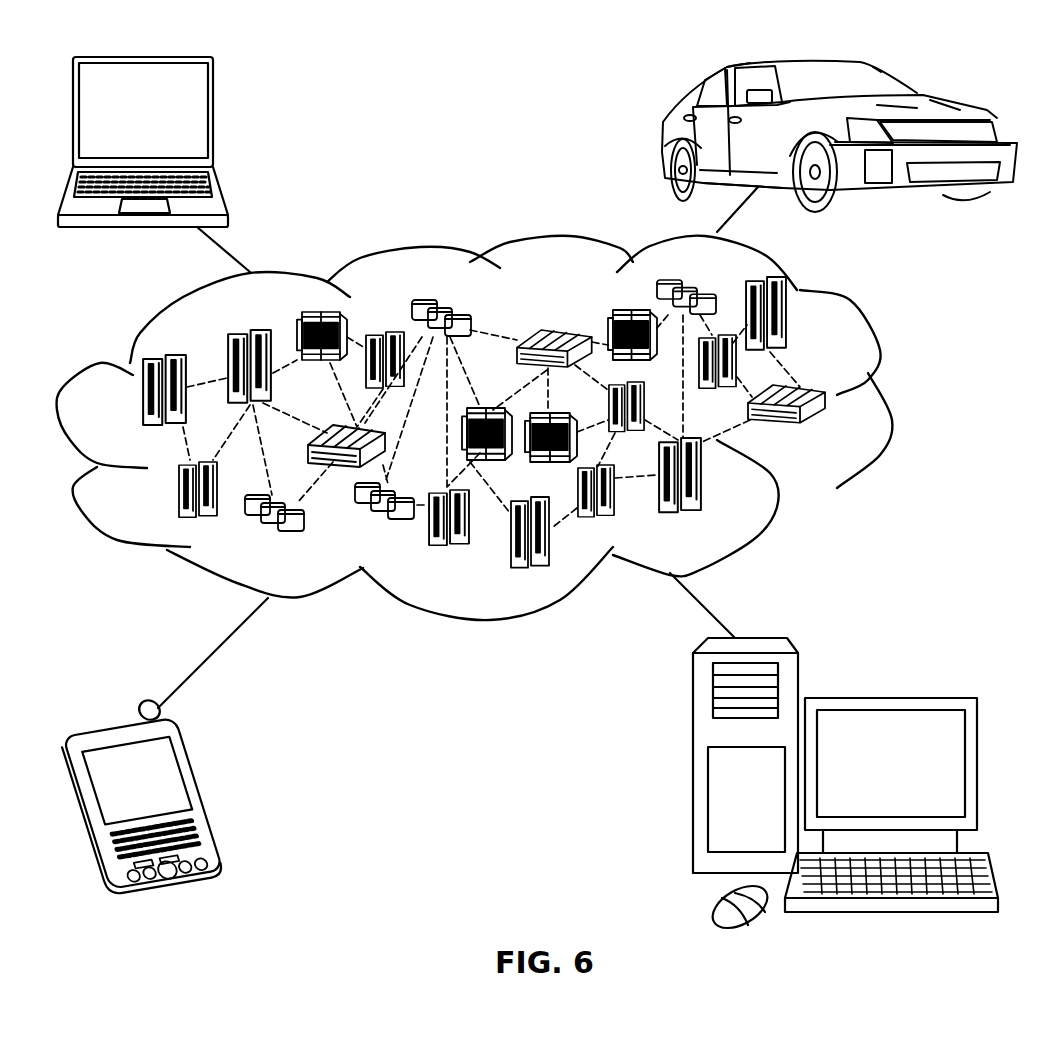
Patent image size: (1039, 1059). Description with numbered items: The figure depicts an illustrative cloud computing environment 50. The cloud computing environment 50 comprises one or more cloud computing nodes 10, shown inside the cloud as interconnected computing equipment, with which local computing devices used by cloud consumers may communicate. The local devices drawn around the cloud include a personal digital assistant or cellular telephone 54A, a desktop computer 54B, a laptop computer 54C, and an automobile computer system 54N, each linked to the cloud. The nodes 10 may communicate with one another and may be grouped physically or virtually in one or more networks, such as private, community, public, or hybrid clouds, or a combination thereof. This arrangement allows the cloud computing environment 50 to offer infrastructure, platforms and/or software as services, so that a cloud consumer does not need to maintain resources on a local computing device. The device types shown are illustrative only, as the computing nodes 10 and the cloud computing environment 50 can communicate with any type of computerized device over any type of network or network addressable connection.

The cloud computing node 10 is at (827, 432).
The cloud computing environment 50 is at (888, 402).
The personal digital assistant or cellular telephone 54A is at (202, 793).
The desktop computer 54B is at (890, 697).
The laptop computer 54C is at (215, 120).
The automobile computer system 54N is at (660, 140).